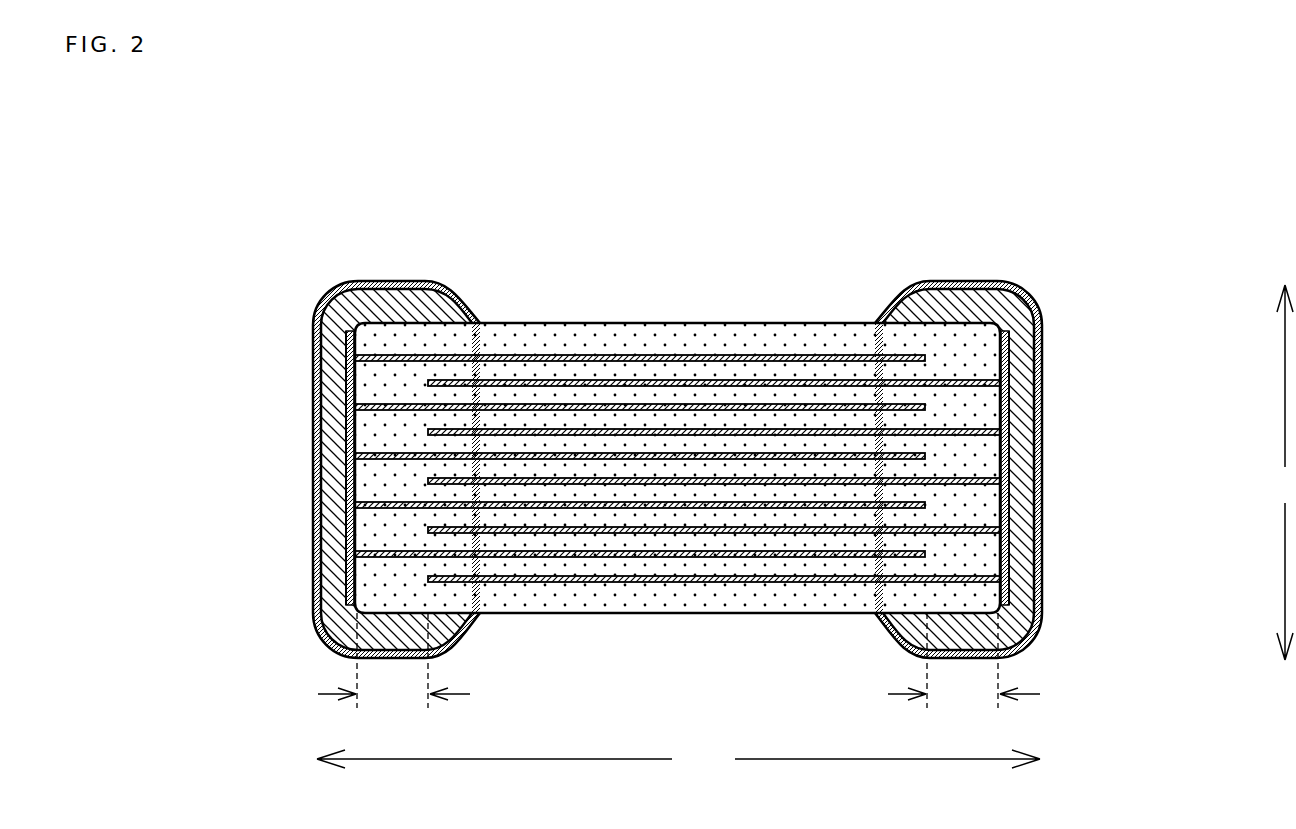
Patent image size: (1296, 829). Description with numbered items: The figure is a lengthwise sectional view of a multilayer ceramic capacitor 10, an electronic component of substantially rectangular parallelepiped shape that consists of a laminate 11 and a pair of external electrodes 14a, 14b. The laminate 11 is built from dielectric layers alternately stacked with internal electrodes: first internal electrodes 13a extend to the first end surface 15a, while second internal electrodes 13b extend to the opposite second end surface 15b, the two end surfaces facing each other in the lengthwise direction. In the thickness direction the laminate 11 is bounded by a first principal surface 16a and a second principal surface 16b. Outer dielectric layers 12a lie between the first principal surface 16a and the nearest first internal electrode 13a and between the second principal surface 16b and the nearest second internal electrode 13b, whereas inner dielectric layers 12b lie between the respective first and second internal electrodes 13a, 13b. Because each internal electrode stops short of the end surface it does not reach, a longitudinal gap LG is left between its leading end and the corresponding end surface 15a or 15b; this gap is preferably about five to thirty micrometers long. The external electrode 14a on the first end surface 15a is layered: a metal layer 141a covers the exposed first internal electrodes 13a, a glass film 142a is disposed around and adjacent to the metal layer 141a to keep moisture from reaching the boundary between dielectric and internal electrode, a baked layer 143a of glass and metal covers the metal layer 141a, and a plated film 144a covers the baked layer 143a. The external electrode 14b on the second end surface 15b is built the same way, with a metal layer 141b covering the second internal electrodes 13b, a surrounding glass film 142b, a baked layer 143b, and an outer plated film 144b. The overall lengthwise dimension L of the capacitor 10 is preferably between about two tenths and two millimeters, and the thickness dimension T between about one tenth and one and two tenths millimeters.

The multilayer ceramic capacitor 10 is at (908, 192).
The laminate 11 is at (833, 323).
The outer dielectric layer 12a is at (612, 347).
The inner dielectric layer 12b is at (702, 352).
The first internal electrode 13a is at (790, 355).
The second internal electrode 13b is at (730, 534).
The external electrode 14a is at (168, 308).
The external electrode 14b is at (1197, 293).
The metal layer 141a is at (318, 392).
The metal layer 141b is at (1010, 400).
The glass film 142a is at (318, 344).
The glass film 142b is at (1015, 342).
The baked layer 143a is at (318, 443).
The baked layer 143b is at (1036, 443).
The plated film 144a is at (318, 306).
The plated film 144b is at (1034, 300).
The first end surface 15a is at (352, 533).
The second end surface 15b is at (1003, 553).
The first principal surface 16a is at (537, 323).
The second principal surface 16b is at (580, 614).
The dimension in the lengthwise direction L is at (678, 757).
The dimension in the thickness direction T is at (1285, 472).
The longitudinal gap LG is at (679, 660).